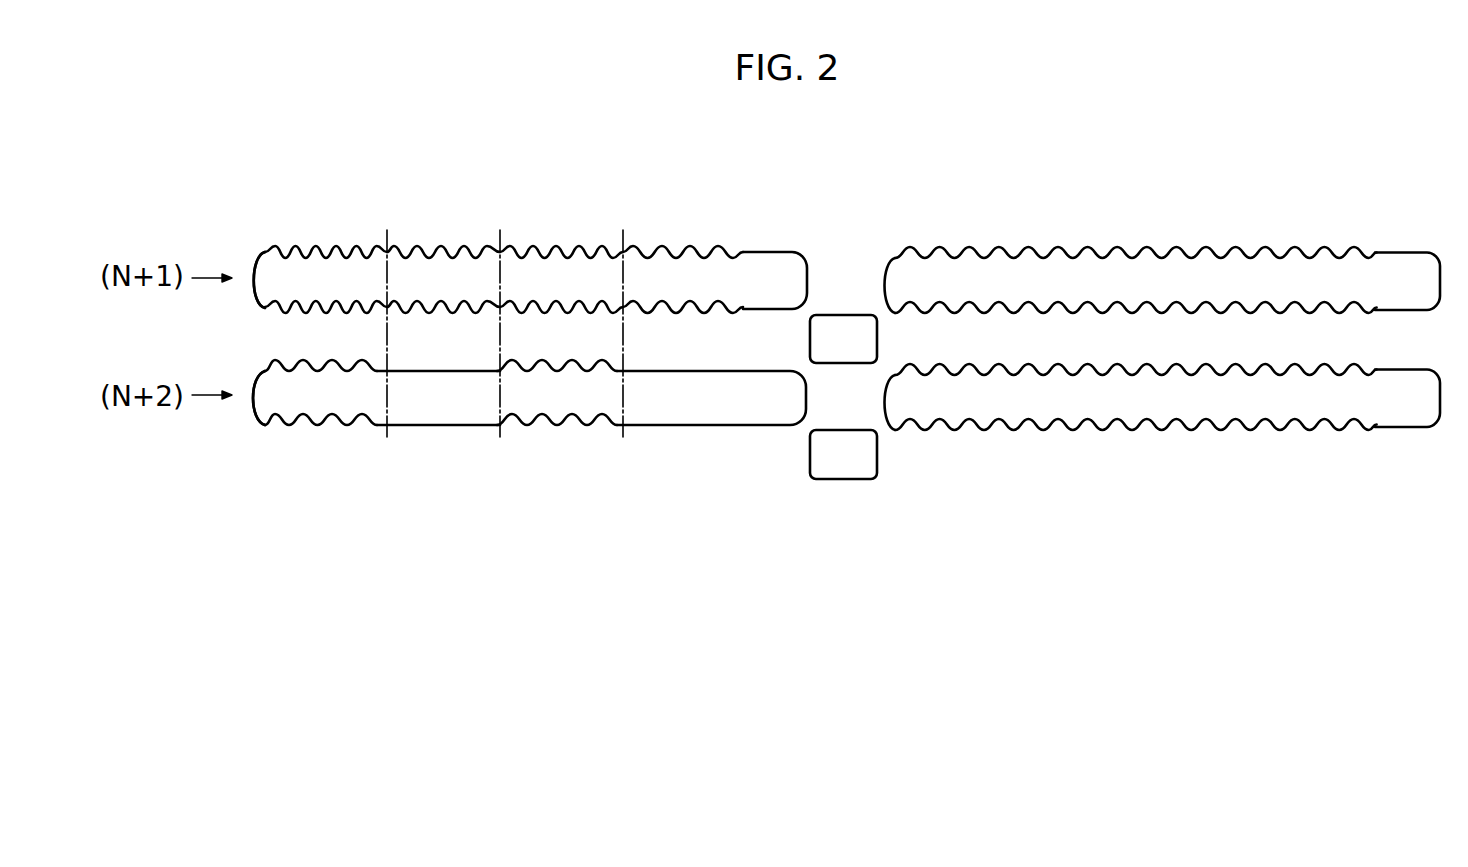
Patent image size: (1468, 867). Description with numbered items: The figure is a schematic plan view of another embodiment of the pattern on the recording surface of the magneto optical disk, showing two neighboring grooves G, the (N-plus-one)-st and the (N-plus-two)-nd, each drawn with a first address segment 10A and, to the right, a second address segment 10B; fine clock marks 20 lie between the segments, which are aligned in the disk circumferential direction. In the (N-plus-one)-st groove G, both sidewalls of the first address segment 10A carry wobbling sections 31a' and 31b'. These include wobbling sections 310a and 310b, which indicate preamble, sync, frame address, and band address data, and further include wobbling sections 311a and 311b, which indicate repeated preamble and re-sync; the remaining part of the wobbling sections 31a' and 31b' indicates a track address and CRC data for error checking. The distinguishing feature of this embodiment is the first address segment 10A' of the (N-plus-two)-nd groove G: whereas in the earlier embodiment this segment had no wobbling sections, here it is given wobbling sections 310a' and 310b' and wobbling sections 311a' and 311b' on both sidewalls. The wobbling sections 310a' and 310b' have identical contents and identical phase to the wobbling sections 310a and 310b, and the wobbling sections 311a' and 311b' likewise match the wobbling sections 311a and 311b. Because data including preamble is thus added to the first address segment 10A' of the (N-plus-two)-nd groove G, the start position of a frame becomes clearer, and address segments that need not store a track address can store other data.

The first address segment 10A is at (536, 248).
The first address segment of the (N+2)-nd groove 10A' is at (529, 425).
The second address segment 10B is at (1197, 388).
The clock mark 20 is at (840, 470).
The wobbling section 31a' is at (683, 221).
The wobbling section 31b' is at (713, 326).
The wobbling section 310a is at (326, 224).
The wobbling section 310b is at (326, 328).
The wobbling section 310a' is at (374, 347).
The wobbling section 310b' is at (325, 445).
The wobbling section 311a is at (561, 224).
The wobbling section 311b is at (561, 329).
The wobbling section 311a' is at (609, 352).
The wobbling section 311b' is at (560, 445).
The groove G is at (247, 265).